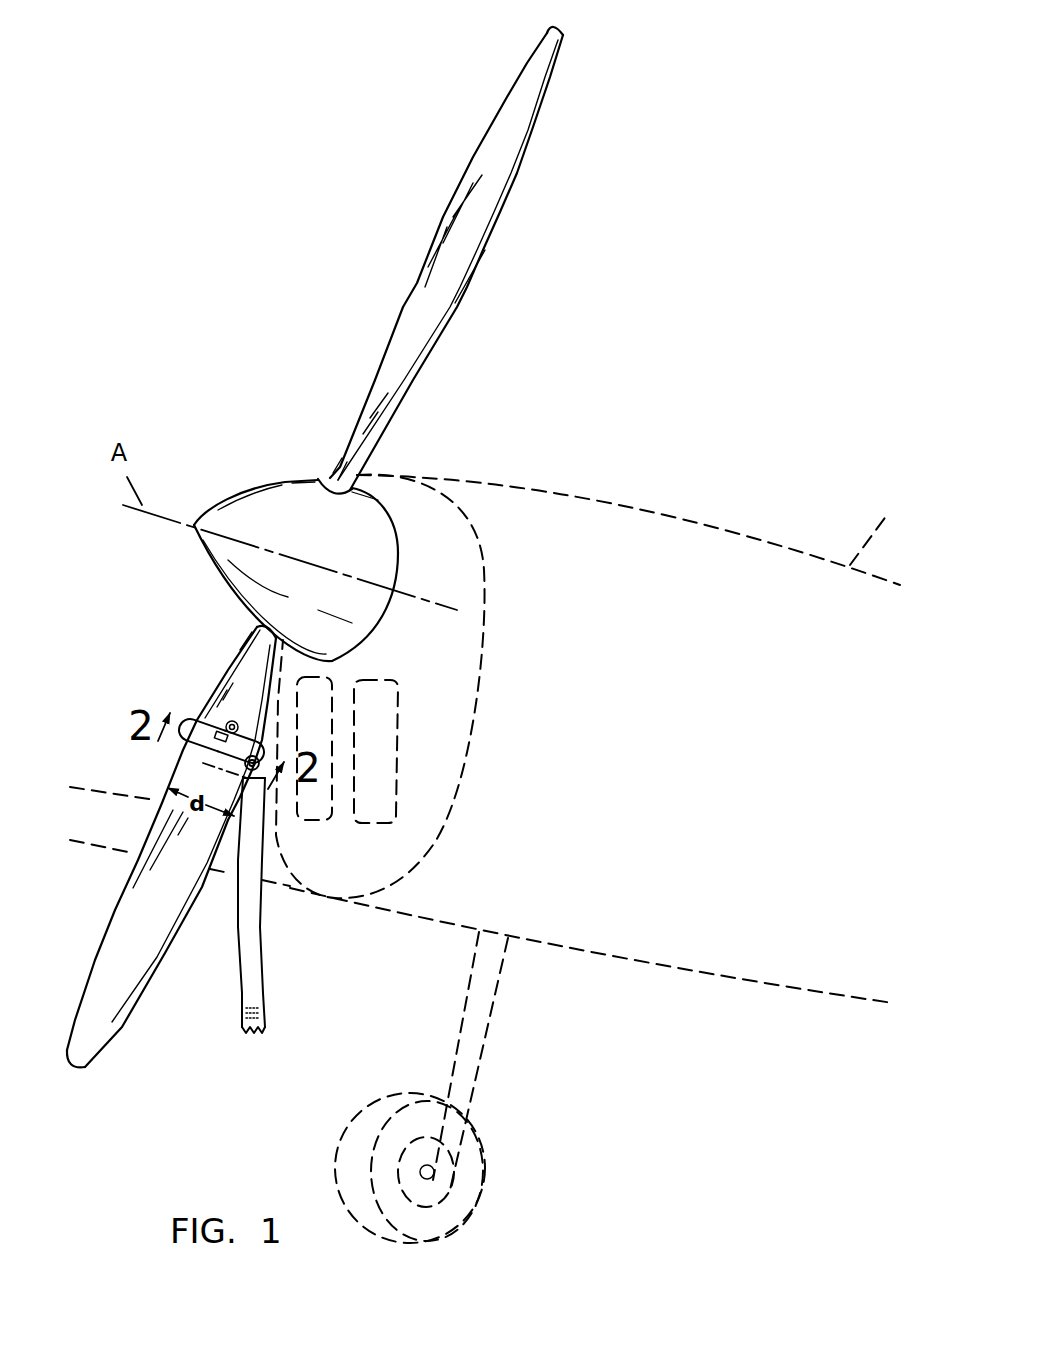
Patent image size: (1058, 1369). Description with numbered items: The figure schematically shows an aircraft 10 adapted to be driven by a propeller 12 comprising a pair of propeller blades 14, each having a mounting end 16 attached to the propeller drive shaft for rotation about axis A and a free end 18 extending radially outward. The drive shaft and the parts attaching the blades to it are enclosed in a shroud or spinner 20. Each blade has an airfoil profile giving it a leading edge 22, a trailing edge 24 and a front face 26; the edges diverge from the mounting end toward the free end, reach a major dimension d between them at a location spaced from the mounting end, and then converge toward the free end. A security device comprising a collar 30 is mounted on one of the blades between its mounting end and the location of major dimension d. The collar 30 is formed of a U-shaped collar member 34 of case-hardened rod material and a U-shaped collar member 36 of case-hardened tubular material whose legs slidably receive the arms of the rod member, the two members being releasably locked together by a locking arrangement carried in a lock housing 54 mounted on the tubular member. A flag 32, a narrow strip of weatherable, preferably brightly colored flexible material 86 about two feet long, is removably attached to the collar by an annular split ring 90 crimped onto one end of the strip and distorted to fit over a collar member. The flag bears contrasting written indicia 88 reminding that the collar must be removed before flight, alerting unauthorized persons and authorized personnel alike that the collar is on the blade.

The aircraft 10 is at (726, 440).
The propeller 12 is at (352, 569).
The propeller blades 14 is at (352, 569).
The mounting ends 16 is at (328, 472).
The free ends 18 is at (562, 30).
The shroud or spinner 20 is at (262, 493).
The leading edge 22 is at (493, 222).
The trailing edge 24 is at (458, 176).
The front face 26 is at (505, 151).
The collar 30 is at (230, 693).
The flag 32 is at (298, 901).
The U-shaped collar member 34 is at (190, 722).
The U-shaped collar member 36 is at (262, 745).
The lock housing 54 is at (233, 718).
The flexible material 86 is at (264, 1000).
The written indicia 88 is at (260, 957).
The annular split ring 90 is at (258, 771).